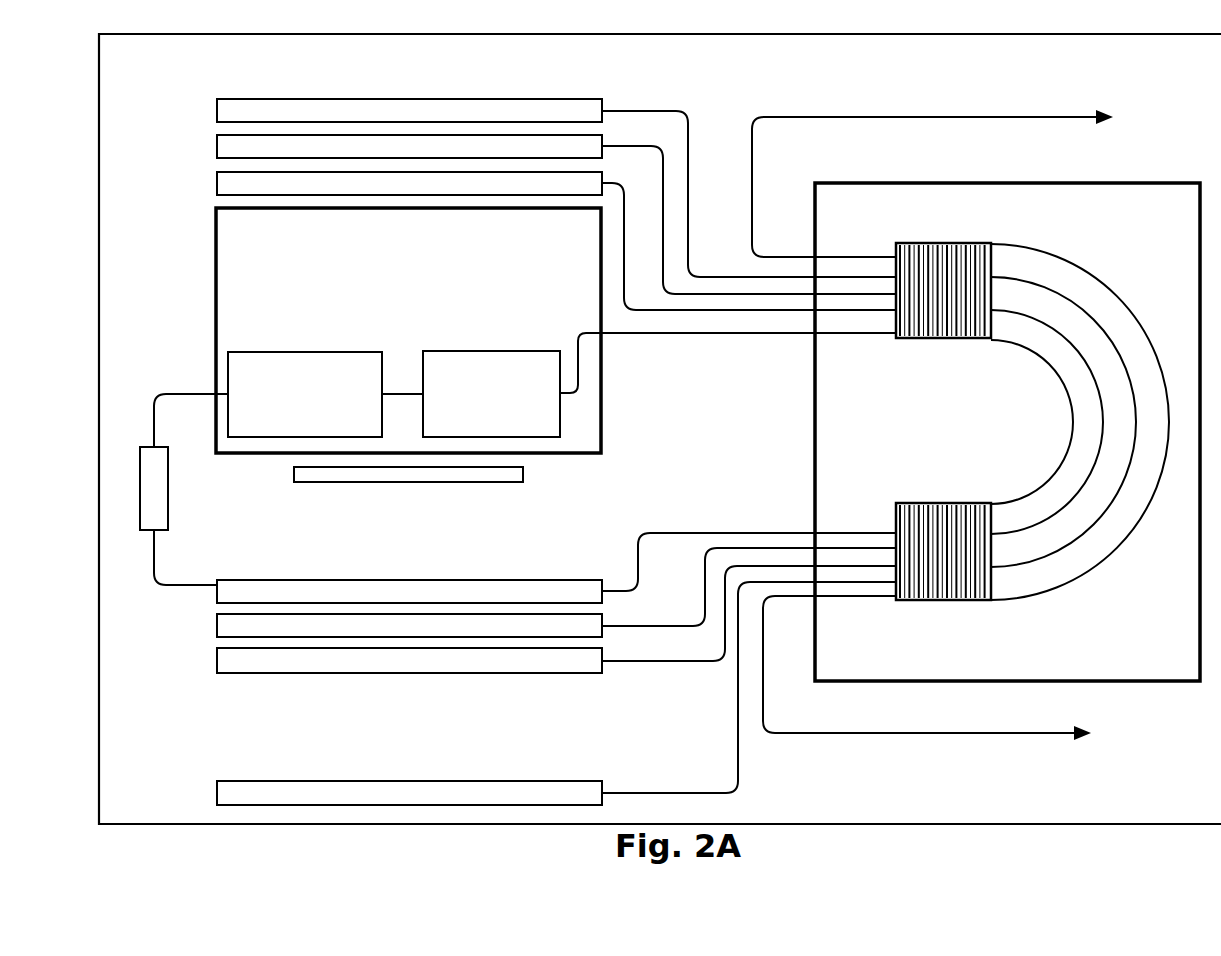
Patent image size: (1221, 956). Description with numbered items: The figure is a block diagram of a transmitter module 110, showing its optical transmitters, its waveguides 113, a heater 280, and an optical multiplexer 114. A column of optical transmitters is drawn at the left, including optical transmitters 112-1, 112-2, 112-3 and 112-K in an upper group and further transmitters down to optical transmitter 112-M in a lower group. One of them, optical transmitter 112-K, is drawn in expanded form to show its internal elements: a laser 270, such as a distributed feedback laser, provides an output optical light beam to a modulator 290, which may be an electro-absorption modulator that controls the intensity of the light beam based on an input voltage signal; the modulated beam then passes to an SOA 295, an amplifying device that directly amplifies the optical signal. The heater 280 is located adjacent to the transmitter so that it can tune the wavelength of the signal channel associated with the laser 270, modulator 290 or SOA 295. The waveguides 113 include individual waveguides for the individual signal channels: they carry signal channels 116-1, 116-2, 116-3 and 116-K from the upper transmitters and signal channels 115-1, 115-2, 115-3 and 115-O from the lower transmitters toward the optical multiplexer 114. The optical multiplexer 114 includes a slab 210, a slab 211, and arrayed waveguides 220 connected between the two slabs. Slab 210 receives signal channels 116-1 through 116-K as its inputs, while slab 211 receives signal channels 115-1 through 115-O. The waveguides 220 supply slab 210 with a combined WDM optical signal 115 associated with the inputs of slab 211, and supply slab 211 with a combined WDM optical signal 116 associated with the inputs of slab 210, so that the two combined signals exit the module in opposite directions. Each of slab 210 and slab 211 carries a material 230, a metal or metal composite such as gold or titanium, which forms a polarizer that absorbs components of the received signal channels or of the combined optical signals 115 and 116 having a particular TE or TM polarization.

The transmitter module 110 is at (191, 67).
The optical transmitter 112-1 is at (217, 110).
The optical transmitter 112-2 is at (217, 146).
The optical transmitter 112-3 is at (217, 183).
The optical transmitter 112-K is at (216, 234).
The optical transmitter 112-M is at (217, 794).
The waveguides 113 is at (754, 762).
The optical multiplexer 114 is at (1108, 183).
The optical signal 115 is at (960, 116).
The signal channel 115-1 is at (707, 531).
The signal channel 115-2 is at (663, 625).
The signal channel 115-3 is at (645, 663).
The signal channel 115-O is at (717, 788).
The optical signal 116 is at (917, 733).
The signal channel 116-1 is at (623, 109).
The signal channel 116-2 is at (637, 145).
The signal channel 116-3 is at (625, 200).
The signal channel 116-K is at (663, 331).
The slab 210 is at (899, 340).
The slab 211 is at (926, 503).
The waveguides 220 is at (1126, 300).
The material 230 is at (962, 326).
The laser 270 is at (168, 512).
The heater 280 is at (523, 472).
The modulator 290 is at (325, 394).
The SOA 295 is at (491, 394).